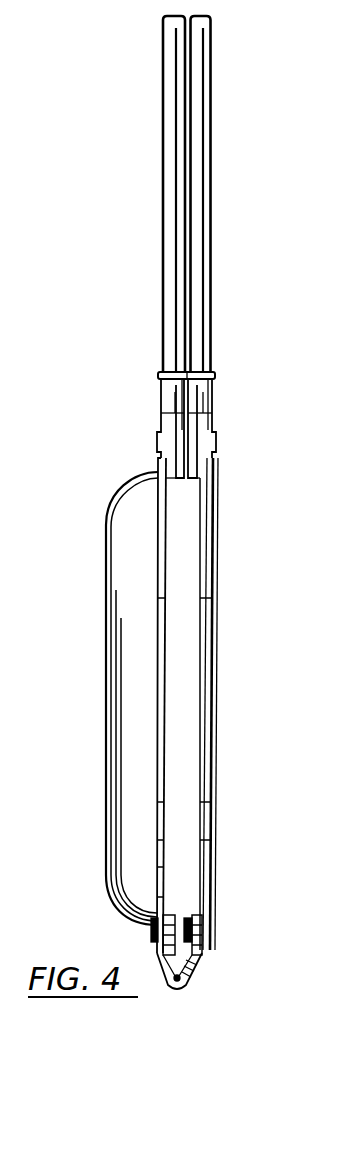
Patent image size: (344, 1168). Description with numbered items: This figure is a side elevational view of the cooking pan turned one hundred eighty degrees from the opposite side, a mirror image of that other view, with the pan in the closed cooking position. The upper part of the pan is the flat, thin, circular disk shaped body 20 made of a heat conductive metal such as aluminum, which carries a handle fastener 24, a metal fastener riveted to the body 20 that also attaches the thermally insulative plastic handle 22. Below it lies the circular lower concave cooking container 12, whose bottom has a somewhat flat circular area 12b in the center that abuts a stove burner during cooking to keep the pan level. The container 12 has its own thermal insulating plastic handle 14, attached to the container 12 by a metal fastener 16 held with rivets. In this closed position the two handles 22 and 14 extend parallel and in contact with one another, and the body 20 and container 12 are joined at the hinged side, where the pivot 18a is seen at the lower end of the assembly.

The lower concave cooking container 12 is at (133, 480).
The flat circular area 12b is at (103, 757).
The handle 14 is at (170, 143).
The metal fastener 16 is at (175, 402).
The pivot pin 18a is at (186, 981).
The disk shaped body 20 is at (216, 760).
The handle 22 is at (197, 143).
The handle fastener 24 is at (200, 400).